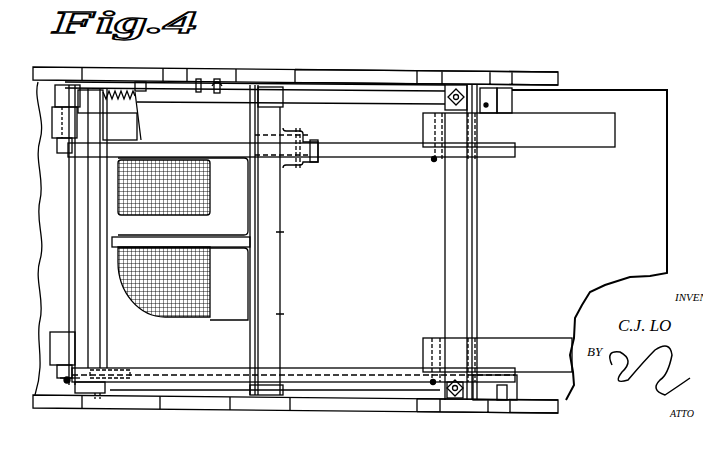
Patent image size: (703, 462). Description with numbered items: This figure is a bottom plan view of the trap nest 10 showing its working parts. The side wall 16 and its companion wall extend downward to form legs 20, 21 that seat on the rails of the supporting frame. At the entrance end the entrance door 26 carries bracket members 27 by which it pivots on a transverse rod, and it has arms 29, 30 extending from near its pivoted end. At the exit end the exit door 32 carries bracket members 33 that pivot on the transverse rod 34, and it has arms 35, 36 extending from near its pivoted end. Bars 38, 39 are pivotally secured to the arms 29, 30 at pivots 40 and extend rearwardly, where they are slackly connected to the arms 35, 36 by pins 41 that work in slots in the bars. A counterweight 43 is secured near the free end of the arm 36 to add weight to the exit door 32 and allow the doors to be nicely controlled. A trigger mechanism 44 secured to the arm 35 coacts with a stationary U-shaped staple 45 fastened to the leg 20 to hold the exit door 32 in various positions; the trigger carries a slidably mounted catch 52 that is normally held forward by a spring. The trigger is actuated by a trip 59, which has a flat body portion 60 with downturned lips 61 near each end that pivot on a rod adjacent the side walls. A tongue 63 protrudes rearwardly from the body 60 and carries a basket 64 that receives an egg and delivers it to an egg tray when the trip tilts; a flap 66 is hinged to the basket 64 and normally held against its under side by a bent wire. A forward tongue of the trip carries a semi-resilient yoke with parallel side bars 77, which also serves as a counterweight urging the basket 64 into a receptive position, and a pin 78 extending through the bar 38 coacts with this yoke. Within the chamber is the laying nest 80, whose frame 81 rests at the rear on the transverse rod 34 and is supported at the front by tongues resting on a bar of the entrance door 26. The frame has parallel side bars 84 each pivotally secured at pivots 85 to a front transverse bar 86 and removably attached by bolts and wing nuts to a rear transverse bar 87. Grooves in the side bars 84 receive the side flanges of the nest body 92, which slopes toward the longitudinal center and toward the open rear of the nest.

The trap nest 10 is at (345, 69).
The side wall 16 is at (386, 72).
The leg 20 is at (118, 68).
The leg 21 is at (432, 72).
The entrance door 26 is at (657, 105).
The bracket member 27 is at (505, 88).
The arm 29 is at (567, 124).
The arm 30 is at (534, 347).
The exit door 32 is at (50, 230).
The bracket member 33 is at (80, 393).
The transverse rod 34 is at (102, 328).
The arm 35 is at (55, 130).
The arm 36 is at (55, 332).
The bar 38 is at (218, 128).
The bar 39 is at (297, 370).
The pivot 40 is at (433, 162).
The pin 41 is at (66, 383).
The counterweight 43 is at (96, 126).
The trigger mechanism 44 is at (194, 80).
The staple 45 is at (216, 80).
The catch 52 is at (143, 84).
The trip 59 is at (284, 314).
The body portion 60 is at (275, 233).
The downturned lip 61 is at (263, 85).
The tongue 63 is at (212, 250).
The basket 64 is at (193, 320).
The flap 66 is at (206, 219).
The side bar 77 is at (312, 166).
The pin 78 is at (303, 140).
The laying nest 80 is at (428, 266).
The frame 81 is at (455, 193).
The side bar 84 is at (320, 391).
The pivot 85 is at (459, 88).
The front transverse bar 86 is at (458, 225).
The rear transverse bar 87 is at (124, 346).
The nest body 92 is at (422, 294).